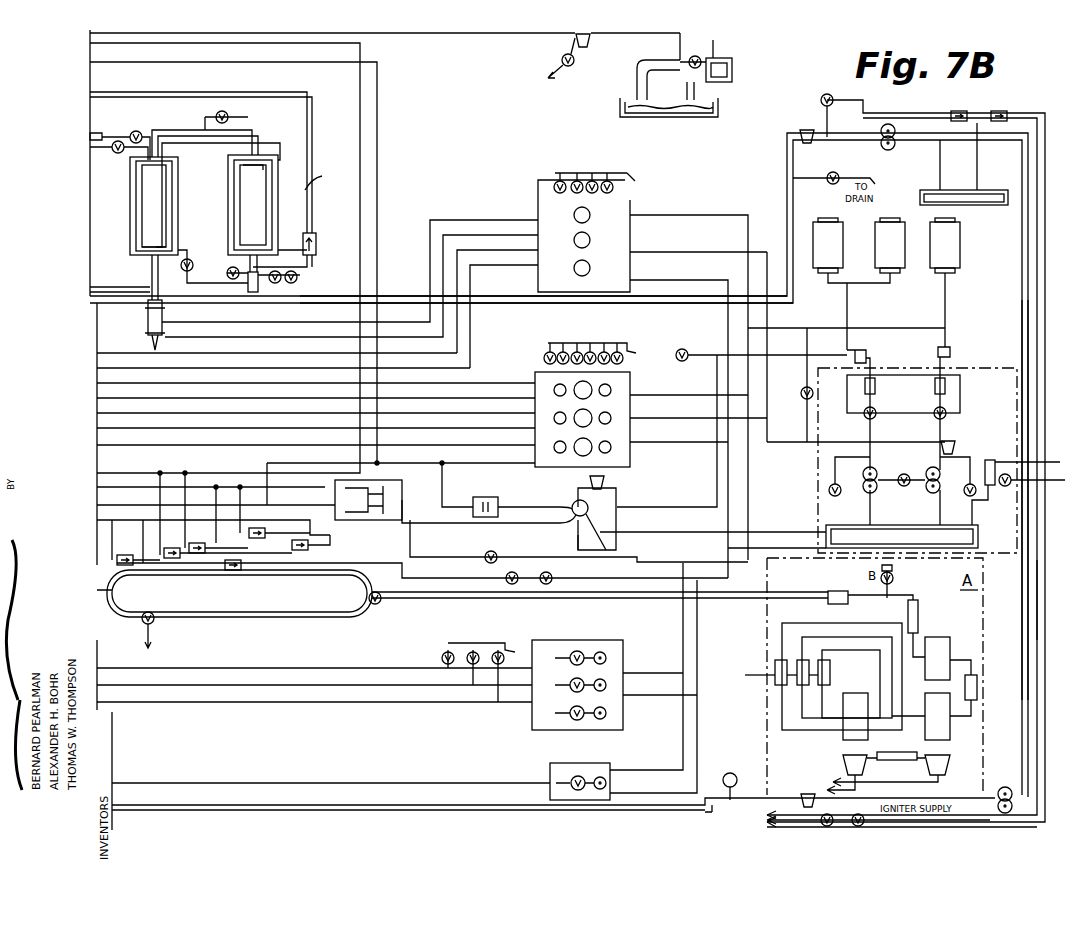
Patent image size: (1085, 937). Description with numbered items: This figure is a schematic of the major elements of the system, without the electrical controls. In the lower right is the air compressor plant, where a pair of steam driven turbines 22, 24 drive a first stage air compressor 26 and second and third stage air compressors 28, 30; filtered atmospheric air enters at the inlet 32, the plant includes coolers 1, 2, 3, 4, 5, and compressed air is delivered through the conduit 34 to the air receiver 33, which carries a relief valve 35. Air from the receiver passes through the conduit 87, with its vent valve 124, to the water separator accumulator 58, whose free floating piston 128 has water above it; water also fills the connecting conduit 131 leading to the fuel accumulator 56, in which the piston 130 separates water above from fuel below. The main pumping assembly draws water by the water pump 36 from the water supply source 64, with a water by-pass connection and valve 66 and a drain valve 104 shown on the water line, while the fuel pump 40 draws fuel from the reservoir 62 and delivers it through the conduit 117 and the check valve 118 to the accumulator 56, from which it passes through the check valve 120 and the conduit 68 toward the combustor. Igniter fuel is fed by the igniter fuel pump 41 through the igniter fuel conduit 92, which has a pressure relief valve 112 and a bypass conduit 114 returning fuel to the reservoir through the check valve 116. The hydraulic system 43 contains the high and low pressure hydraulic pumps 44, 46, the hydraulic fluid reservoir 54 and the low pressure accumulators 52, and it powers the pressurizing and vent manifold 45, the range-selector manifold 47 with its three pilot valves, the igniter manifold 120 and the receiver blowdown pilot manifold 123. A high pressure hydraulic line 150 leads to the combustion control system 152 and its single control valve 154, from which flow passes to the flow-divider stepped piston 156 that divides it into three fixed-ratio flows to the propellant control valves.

The drain valve 104 is at (482, 50).
The water pump 36 is at (637, 70).
The water by-pass connection and valve 66 is at (726, 57).
The water supply source 64 is at (724, 106).
The check valve 116 is at (1004, 112).
The conduit 117 is at (787, 156).
The igniter fuel conduit 92 is at (1022, 301).
The fuel pump 40 is at (893, 146).
The fuel supply source (fuel reservoir) 62 is at (994, 190).
The low pressure hydraulic system accumulators 52 is at (886, 284).
The hydraulic system 43 is at (941, 450).
The high pressure hydraulic pump 44 is at (866, 492).
The low pressure hydraulic pump 46 is at (933, 492).
The hydraulic fluid reservoir 54 is at (958, 525).
The conduit 68 is at (137, 113).
The water separator accumulator 58 is at (162, 205).
The free floating piston 128 is at (152, 246).
The fuel accumulator 56 is at (266, 217).
The free floating piston 130 is at (262, 167).
The connecting conduit 131 is at (256, 132).
The check valve / igniter manifold 120 is at (318, 245).
The conduit 87 is at (113, 292).
The check valve 118 is at (248, 290).
The vent valve 124 is at (146, 320).
The pressurizing and vent manifold 45 is at (640, 201).
The range-selector manifold 47 is at (642, 381).
The flow-divider stepped piston 156 is at (335, 505).
The high pressure hydraulic line 150 is at (657, 516).
The control valve 154 is at (572, 520).
The combustion control system 152 is at (612, 545).
The air receiver 33 is at (328, 601).
The relief valve 35 is at (156, 623).
The conduit 34 is at (863, 598).
The bypass conduit 114 is at (1045, 601).
The receiver blowdown pilot manifold 123 is at (612, 785).
The igniter fuel pump 41 is at (1018, 800).
The pressure relief valve 112 is at (842, 824).
The cooler 5 is at (939, 628).
The third stage air compressor 30 is at (948, 658).
The second stage air compressor 28 is at (931, 716).
The cooler 4 is at (991, 680).
The air inlet 32 is at (842, 676).
The first stage air compressor 26 is at (855, 716).
The cooler 1 is at (754, 676).
The cooler 2 is at (773, 682).
The cooler 3 is at (783, 688).
The steam driven turbine 22 is at (760, 762).
The steam driven turbine 24 is at (952, 766).